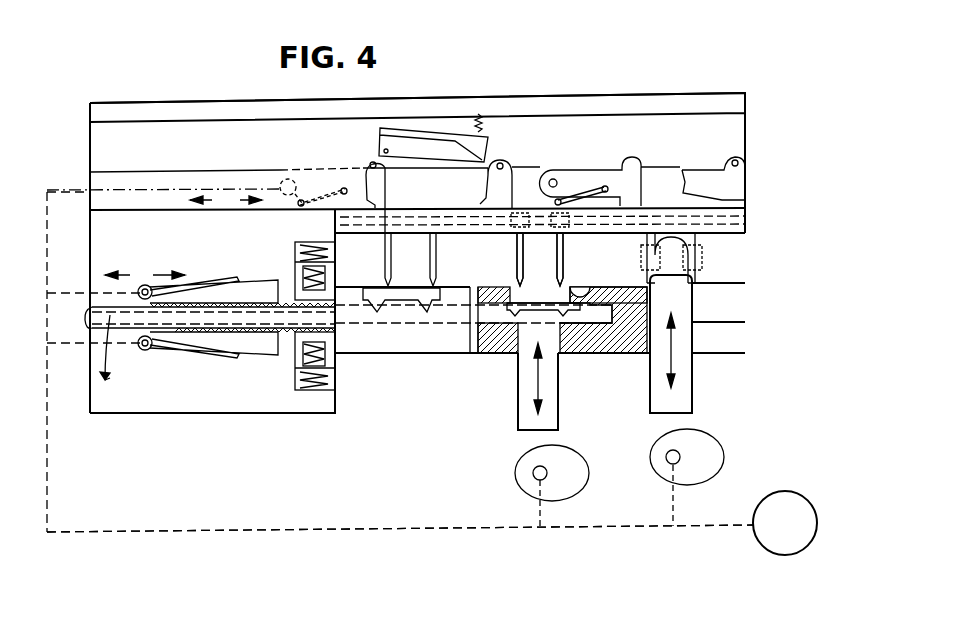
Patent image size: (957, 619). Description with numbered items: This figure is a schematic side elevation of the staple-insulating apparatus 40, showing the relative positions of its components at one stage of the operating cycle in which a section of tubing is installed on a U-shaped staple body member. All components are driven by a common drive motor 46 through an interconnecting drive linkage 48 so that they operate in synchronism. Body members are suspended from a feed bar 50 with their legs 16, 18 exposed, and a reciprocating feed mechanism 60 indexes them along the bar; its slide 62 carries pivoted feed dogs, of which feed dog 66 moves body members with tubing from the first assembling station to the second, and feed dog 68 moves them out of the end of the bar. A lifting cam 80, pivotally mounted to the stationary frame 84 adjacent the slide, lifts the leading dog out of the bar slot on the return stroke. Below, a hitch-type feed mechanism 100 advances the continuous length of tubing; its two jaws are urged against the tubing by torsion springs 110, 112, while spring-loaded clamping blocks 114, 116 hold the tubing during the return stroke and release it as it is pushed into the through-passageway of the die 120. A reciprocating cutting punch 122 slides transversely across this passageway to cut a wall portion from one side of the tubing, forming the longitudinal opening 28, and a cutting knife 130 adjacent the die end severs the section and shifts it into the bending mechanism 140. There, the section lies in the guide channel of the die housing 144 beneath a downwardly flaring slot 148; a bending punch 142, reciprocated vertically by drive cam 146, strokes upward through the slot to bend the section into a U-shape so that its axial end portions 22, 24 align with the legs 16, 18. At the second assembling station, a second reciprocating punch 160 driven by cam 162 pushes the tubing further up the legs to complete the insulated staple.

The leg 16 is at (517, 244).
The leg 18 is at (565, 246).
The axial end portion 22 is at (493, 316).
The axial end portion 24 is at (603, 320).
The opening 28 is at (540, 303).
The apparatus 40 is at (572, 76).
The drive motor 46 is at (800, 513).
The drive linkage 48 is at (720, 525).
The feed bar 50 is at (735, 211).
The feed mechanism 60 is at (255, 142).
The slide 62 is at (187, 183).
The feed dog 66 is at (587, 181).
The feed dog 68 is at (738, 162).
The lifting cam 80 is at (416, 129).
The stationary frame 84 is at (118, 112).
The feed mechanism 100 is at (181, 268).
The torsion spring 110 is at (248, 288).
The torsion spring 112 is at (252, 345).
The clamping block 114 is at (297, 268).
The clamping block 116 is at (297, 360).
The die 120 is at (420, 343).
The cutting punch 122 is at (375, 292).
The cutting knife 130 is at (472, 352).
The bending mechanism 140 is at (500, 398).
The bending punch 142 is at (550, 412).
The die housing 144 is at (592, 290).
The drive cam 146 is at (575, 487).
The slot 148 is at (510, 295).
The second reciprocating punch 160 is at (683, 390).
The cam 162 is at (710, 462).